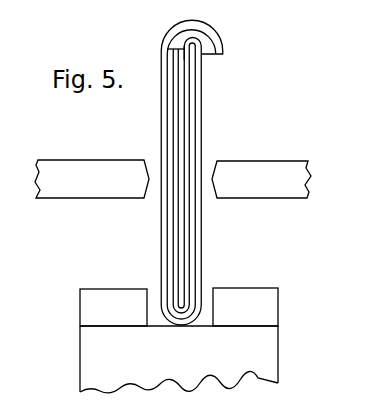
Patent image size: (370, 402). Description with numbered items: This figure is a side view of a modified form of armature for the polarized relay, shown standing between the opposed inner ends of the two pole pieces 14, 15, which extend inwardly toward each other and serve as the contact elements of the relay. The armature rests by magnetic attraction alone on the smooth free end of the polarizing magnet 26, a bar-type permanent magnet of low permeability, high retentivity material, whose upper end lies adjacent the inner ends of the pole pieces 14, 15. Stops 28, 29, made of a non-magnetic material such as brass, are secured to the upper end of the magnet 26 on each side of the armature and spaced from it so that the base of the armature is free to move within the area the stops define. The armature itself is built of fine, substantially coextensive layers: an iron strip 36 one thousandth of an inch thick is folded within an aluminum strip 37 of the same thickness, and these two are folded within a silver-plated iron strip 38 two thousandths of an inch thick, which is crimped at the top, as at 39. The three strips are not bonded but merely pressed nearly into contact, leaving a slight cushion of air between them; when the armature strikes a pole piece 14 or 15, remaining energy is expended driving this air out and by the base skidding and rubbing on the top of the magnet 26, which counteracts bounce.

The pole piece 14 is at (79, 168).
The pole piece 15 is at (274, 163).
The polarizing magnet 26 is at (85, 348).
The stop 28 is at (93, 289).
The stop 29 is at (258, 288).
The iron strip 36 is at (182, 133).
The aluminum strip 37 is at (186, 117).
The silver-plated iron strip 38 is at (195, 87).
The crimp 39 is at (224, 42).